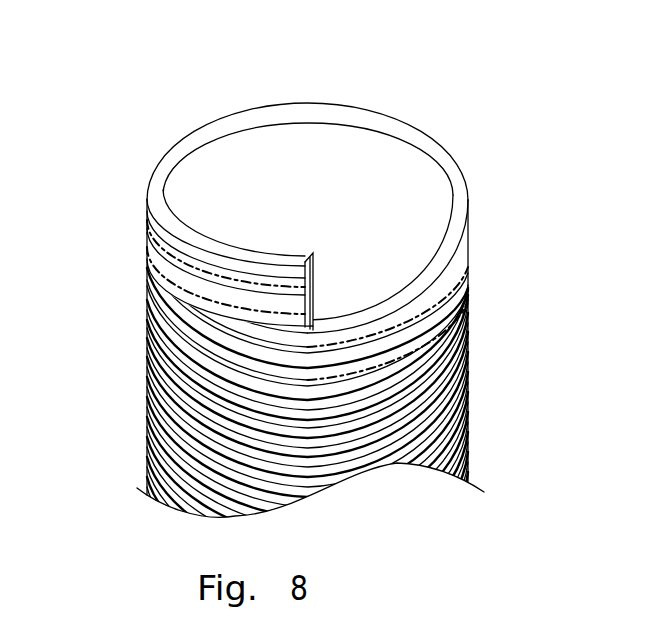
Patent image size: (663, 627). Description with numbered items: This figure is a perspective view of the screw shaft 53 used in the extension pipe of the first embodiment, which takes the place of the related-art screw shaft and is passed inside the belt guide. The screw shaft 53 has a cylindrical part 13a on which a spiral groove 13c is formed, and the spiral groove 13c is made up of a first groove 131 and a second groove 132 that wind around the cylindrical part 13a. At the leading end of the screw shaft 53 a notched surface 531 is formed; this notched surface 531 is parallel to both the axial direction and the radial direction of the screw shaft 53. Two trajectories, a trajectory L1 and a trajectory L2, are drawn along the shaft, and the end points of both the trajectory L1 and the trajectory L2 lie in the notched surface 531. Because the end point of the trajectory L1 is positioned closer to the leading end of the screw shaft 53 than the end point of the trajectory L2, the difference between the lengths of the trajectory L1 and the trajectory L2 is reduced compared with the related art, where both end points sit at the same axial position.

The screw shaft 53 is at (156, 96).
The notched surface 531 is at (313, 284).
The trajectory L1 is at (455, 313).
The trajectory L2 is at (462, 273).
The second groove 132 is at (163, 303).
The first groove 131 is at (169, 342).
The cylindrical part 13a is at (114, 415).
The spiral groove 13c is at (458, 440).